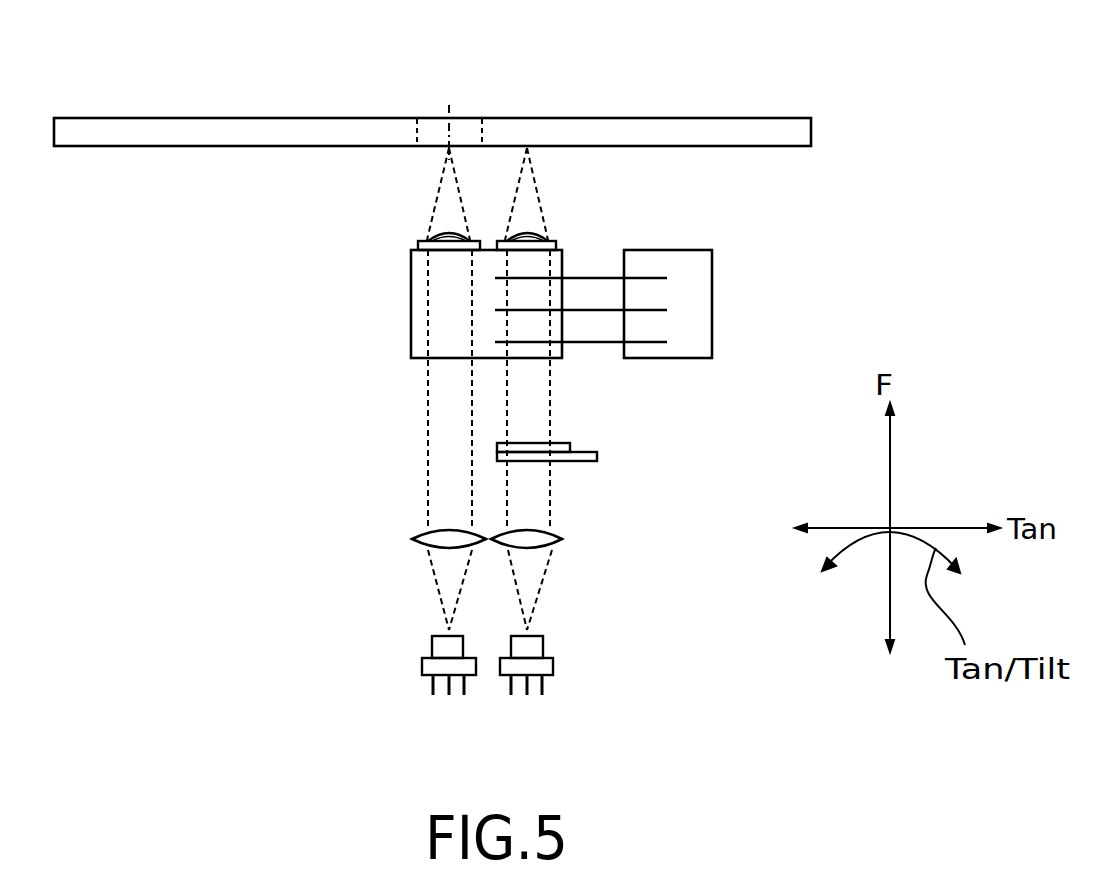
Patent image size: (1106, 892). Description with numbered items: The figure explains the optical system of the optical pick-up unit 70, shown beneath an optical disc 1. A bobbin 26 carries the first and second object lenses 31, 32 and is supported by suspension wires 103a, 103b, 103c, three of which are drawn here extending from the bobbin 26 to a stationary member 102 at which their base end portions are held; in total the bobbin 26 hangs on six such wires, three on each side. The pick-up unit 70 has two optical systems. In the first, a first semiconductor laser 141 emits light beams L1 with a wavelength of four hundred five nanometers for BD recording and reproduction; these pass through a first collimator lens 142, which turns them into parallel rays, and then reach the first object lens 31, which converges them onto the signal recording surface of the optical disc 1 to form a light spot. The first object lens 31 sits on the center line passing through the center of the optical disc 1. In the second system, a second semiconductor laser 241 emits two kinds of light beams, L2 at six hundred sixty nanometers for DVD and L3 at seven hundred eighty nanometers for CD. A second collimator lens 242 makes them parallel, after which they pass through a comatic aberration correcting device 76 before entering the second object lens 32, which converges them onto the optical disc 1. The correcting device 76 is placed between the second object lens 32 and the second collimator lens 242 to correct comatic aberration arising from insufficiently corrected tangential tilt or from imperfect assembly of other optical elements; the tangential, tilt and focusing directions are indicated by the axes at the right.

The optical disc 1 is at (742, 118).
The optical pick-up unit 70 is at (838, 224).
The bobbin 26 is at (411, 345).
The stationary member 102 is at (712, 297).
The suspension wire 103a is at (595, 278).
The suspension wire 103b is at (608, 307).
The suspension wire 103c is at (595, 342).
The first object lens 31 is at (430, 243).
The second object lens 32 is at (515, 238).
The light beams L1 is at (428, 420).
The light beams L2 is at (605, 389).
The light beams L3 is at (552, 410).
The comatic aberration correcting device 76 is at (584, 467).
The first collimator lens 142 is at (426, 545).
The second collimator lens 242 is at (560, 548).
The first semiconductor laser 141 is at (422, 670).
The second semiconductor laser 241 is at (553, 670).